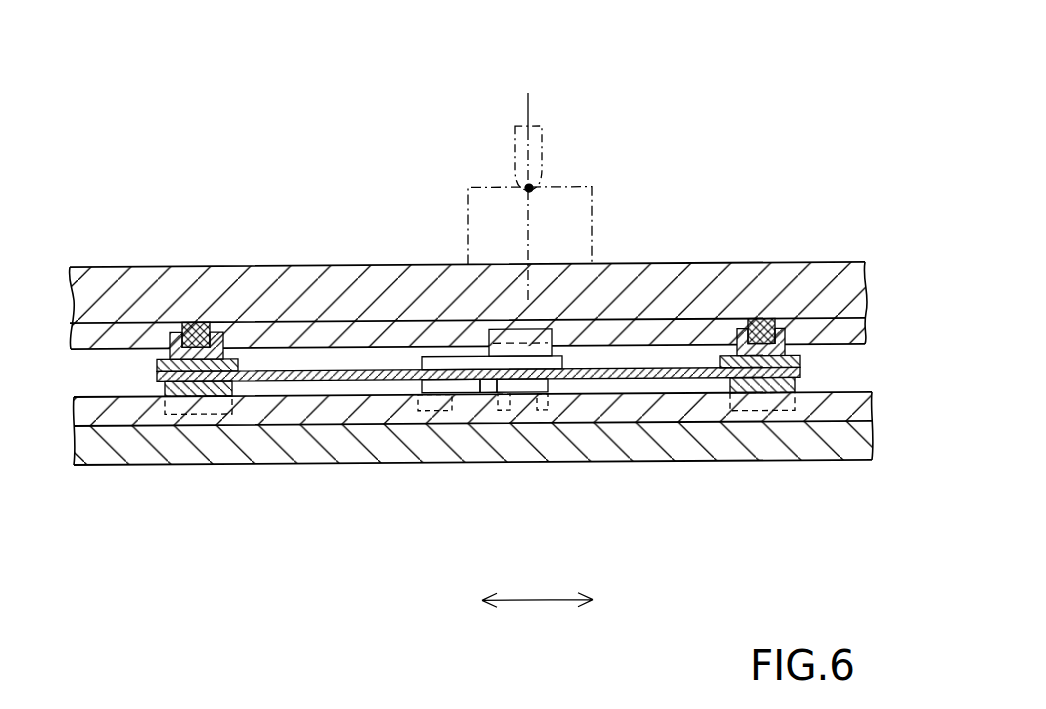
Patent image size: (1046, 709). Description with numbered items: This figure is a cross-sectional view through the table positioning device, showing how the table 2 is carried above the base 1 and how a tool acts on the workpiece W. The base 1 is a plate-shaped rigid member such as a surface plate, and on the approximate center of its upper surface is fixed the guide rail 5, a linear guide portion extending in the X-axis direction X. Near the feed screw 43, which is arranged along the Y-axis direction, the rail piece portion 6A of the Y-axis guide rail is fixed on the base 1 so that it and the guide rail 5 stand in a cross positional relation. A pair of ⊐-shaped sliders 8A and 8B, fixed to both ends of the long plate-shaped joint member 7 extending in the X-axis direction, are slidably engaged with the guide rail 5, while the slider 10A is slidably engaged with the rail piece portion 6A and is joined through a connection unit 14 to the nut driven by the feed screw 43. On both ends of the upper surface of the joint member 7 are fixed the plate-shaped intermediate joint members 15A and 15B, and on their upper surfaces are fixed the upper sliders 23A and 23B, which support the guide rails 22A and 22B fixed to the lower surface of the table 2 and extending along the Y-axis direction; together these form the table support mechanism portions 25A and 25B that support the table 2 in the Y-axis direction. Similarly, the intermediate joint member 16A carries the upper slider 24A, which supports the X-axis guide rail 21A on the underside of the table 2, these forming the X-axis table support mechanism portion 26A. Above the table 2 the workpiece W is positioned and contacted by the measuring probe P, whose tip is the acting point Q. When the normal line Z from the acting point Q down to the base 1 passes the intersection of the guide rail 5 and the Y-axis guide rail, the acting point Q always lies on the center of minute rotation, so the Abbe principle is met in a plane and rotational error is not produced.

The base 1 is at (122, 445).
The table 2 is at (278, 268).
The guide rail 5 is at (837, 412).
The rail piece portion 6A is at (498, 398).
The joint member 7 is at (305, 376).
The slider 8A is at (197, 415).
The slider 8B is at (753, 418).
The slider 10A is at (560, 400).
The connection unit 14 is at (477, 372).
The intermediate joint member 15A is at (157, 366).
The intermediate joint member 15B is at (800, 362).
The intermediate joint member 16A is at (562, 361).
The guide rail 21A is at (350, 339).
The guide rail 22A is at (232, 253).
The guide rail 22B is at (763, 323).
The upper slider 23A is at (170, 349).
The upper slider 23B is at (785, 333).
The upper slider 24A is at (552, 334).
The table support mechanism portion 25A is at (178, 252).
The table support mechanism portion 25B is at (805, 212).
The table support mechanism portion 26A is at (582, 252).
The feed screw 43 is at (440, 388).
The measuring probe P is at (513, 138).
The workpiece W is at (467, 205).
The acting point Q is at (532, 190).
The normal line Z is at (525, 174).
The X-axis direction X is at (537, 581).